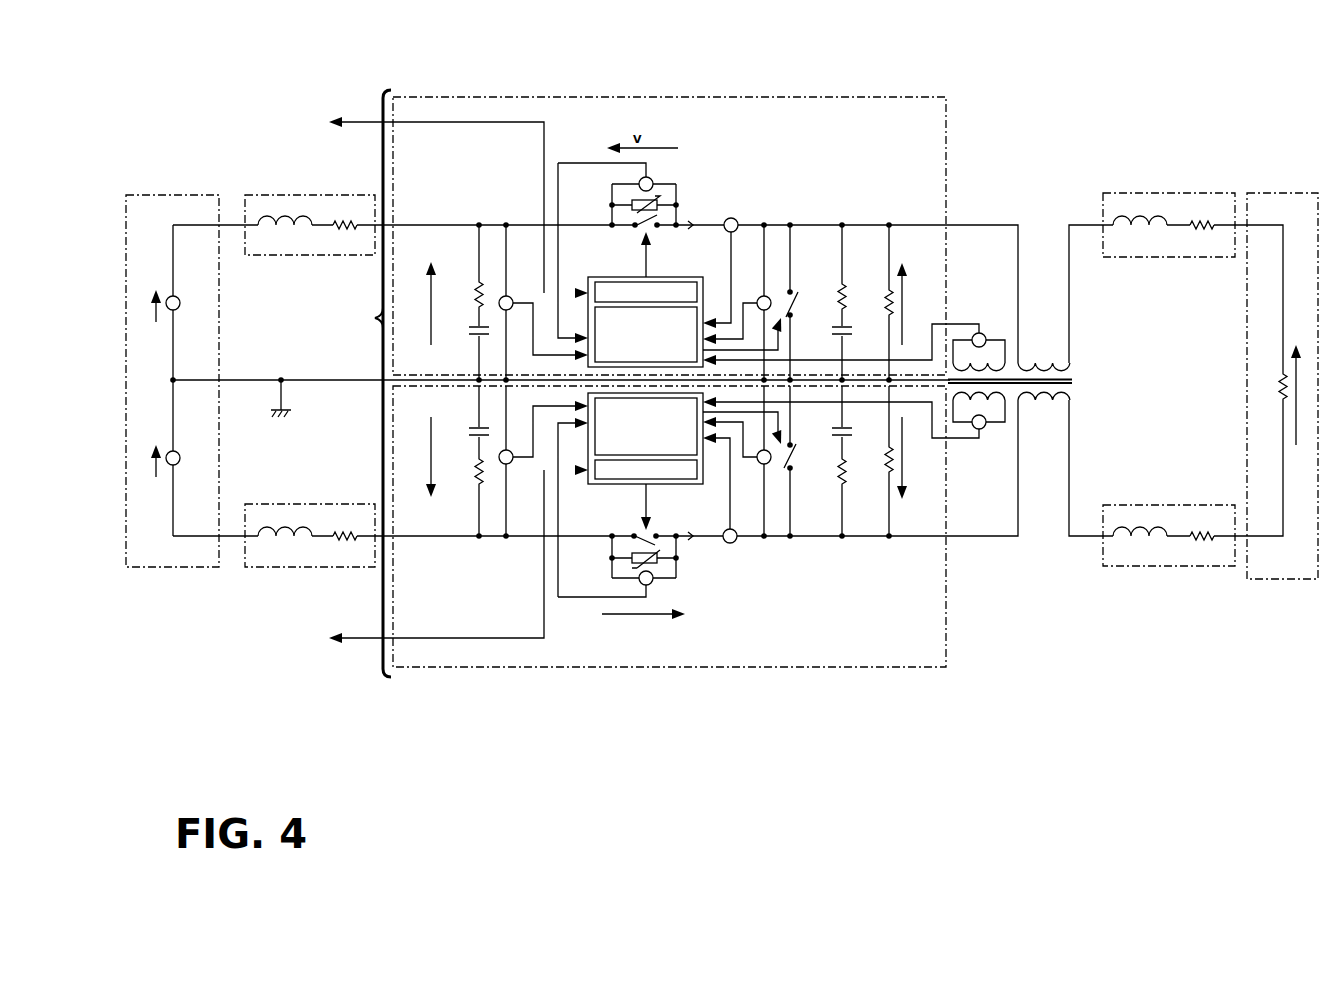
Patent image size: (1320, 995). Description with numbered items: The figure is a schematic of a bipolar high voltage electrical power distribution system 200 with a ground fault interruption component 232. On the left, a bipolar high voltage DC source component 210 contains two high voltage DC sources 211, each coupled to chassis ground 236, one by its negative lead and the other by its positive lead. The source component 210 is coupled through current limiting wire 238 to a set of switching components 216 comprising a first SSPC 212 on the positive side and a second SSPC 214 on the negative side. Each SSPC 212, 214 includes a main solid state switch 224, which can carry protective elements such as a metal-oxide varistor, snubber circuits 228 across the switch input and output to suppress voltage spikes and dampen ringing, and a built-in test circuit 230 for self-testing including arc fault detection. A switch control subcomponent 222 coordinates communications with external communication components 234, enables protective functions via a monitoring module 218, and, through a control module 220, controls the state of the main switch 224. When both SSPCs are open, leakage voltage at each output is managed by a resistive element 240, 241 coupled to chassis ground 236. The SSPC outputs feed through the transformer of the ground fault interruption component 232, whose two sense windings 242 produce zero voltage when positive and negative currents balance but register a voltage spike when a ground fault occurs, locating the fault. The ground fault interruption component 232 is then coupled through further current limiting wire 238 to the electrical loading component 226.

The bipolar high voltage electrical power distribution system 200 is at (240, 54).
The bipolar high voltage DC source component 210 is at (168, 193).
The high voltage DC source 211 is at (156, 326).
The first SSPC 212 is at (812, 89).
The second SSPC 214 is at (950, 587).
The set of switching components 216 is at (365, 383).
The monitoring module 218 is at (659, 334).
The control module 220 is at (659, 301).
The switch control subcomponent 222 is at (664, 277).
The main solid state switch 224 is at (704, 196).
The electrical loading component 226 is at (1270, 193).
The snubber circuit 228 is at (469, 284).
The built-in test circuit 230 is at (805, 279).
The ground fault interruption component 232 is at (1018, 206).
The external communication components 234 is at (458, 381).
The chassis ground 236 is at (292, 414).
The current limiting wire 238 is at (317, 257).
The resistive element 240 is at (905, 297).
The resistive element 241 is at (912, 457).
The sense winding 242 is at (993, 362).